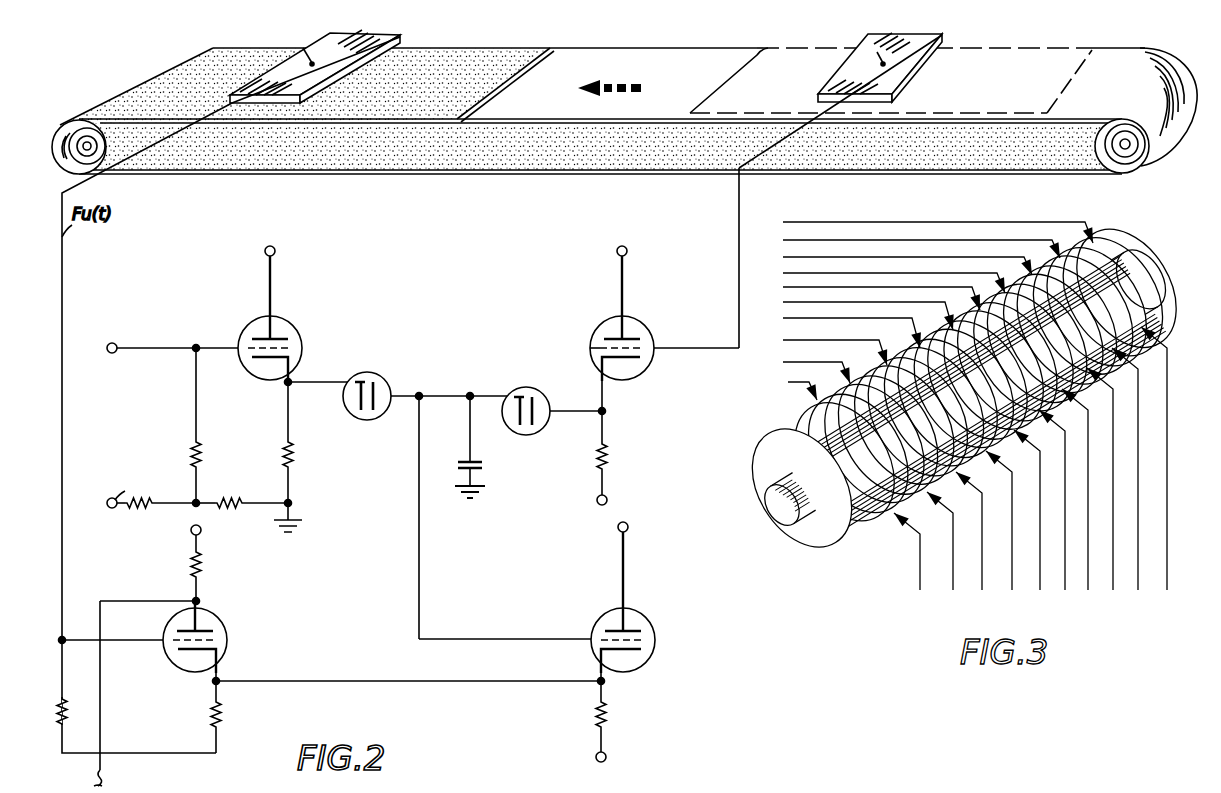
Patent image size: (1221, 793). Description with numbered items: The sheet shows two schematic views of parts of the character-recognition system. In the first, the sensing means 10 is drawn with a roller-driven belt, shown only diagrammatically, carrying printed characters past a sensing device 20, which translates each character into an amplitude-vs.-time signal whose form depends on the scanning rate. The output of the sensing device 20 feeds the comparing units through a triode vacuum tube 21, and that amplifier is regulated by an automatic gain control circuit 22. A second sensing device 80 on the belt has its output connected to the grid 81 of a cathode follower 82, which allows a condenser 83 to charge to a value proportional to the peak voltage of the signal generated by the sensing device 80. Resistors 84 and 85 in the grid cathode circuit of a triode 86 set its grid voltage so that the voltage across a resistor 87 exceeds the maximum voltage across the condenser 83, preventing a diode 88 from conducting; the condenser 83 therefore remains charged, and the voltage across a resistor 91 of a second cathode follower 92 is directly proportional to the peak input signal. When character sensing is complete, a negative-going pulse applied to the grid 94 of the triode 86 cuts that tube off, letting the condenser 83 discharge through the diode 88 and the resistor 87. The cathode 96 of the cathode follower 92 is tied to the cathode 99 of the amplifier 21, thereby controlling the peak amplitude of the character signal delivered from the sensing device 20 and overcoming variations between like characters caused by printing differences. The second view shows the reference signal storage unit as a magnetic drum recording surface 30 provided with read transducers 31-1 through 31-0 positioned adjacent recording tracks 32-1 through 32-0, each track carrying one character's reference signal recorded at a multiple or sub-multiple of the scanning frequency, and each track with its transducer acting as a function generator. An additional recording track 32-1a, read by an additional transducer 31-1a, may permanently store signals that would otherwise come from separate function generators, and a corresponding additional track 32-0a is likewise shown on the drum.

In FIG. 2, the sensing device 20 is at (400, 35).
In FIG. 2, the sensing device 80 is at (947, 36).
In FIG. 2, the sensing means 10 is at (458, 242).
In FIG. 2, the automatic gain control circuit 22 is at (514, 557).
In FIG. 2, the grid 94 is at (230, 346).
In FIG. 2, the triode 86 is at (298, 363).
In FIG. 2, the resistor 87 is at (314, 436).
In FIG. 2, the resistor 85 is at (151, 506).
In FIG. 2, the resistor 84 is at (234, 502).
In FIG. 2, the diode 88 is at (388, 397).
In FIG. 2, the condenser 83 is at (476, 463).
In FIG. 2, the grid 81 is at (594, 350).
In FIG. 2, the cathode follower 82 is at (642, 343).
In FIG. 2, the cathode follower 92 is at (653, 638).
In FIG. 2, the cathode 96 is at (642, 660).
In FIG. 2, the resistor 91 is at (608, 716).
In FIG. 2, the triode vacuum tube 21 is at (218, 628).
In FIG. 2, the cathode 99 is at (217, 656).
In FIG. 3, the recording surface 30 is at (775, 446).
In FIG. 3, the read transducer 31-1a is at (788, 382).
In FIG. 3, the recording track 32-0a is at (807, 410).
In FIG. 3, the read transducer 31-0 is at (900, 515).
In FIG. 3, the recording track 32-0 is at (890, 507).
In FIG. 3, the recording track 32-1a is at (1100, 241).
In FIG. 3, the recording track 32-1 is at (1140, 300).
In FIG. 3, the read transducer 31-1 is at (1149, 323).